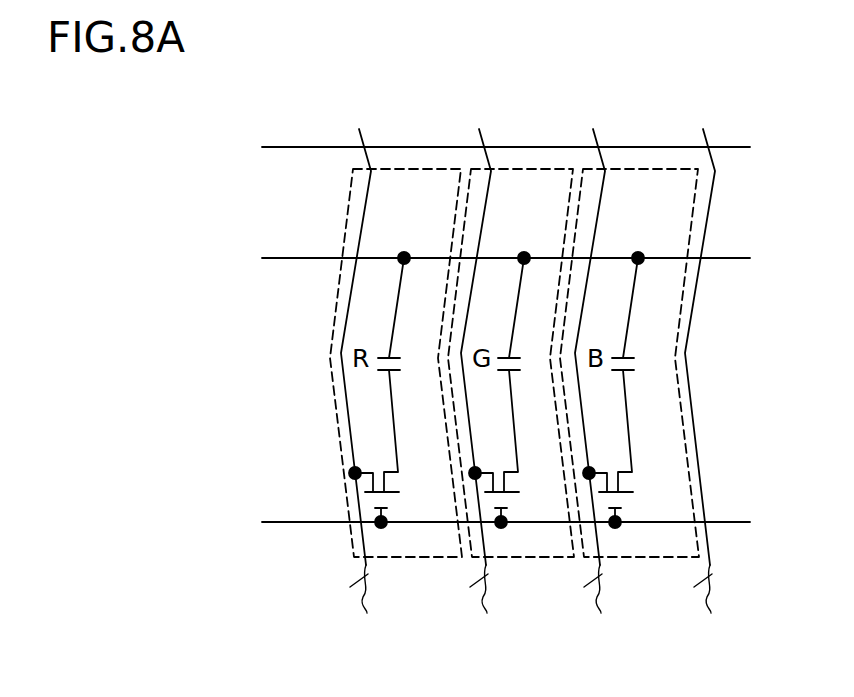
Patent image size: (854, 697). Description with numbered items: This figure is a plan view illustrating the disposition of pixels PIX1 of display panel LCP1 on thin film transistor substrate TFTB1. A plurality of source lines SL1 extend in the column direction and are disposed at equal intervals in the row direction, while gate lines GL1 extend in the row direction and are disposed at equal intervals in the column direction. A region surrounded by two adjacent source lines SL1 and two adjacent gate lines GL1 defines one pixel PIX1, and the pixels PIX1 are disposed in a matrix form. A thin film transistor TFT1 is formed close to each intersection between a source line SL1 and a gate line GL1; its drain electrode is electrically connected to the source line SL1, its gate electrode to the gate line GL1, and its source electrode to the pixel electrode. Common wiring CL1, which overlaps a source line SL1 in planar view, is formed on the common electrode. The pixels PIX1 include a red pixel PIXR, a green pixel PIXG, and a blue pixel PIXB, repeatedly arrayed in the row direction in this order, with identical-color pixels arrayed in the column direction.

The gate line GL1 is at (280, 147).
The common wiring CL1 is at (280, 258).
The source line SL1 is at (541, 386).
The pixel PIX1 is at (514, 294).
The red pixel PIXR is at (413, 169).
The green pixel PIXG is at (535, 169).
The blue pixel PIXB is at (648, 169).
The thin film transistor TFT1 is at (631, 502).